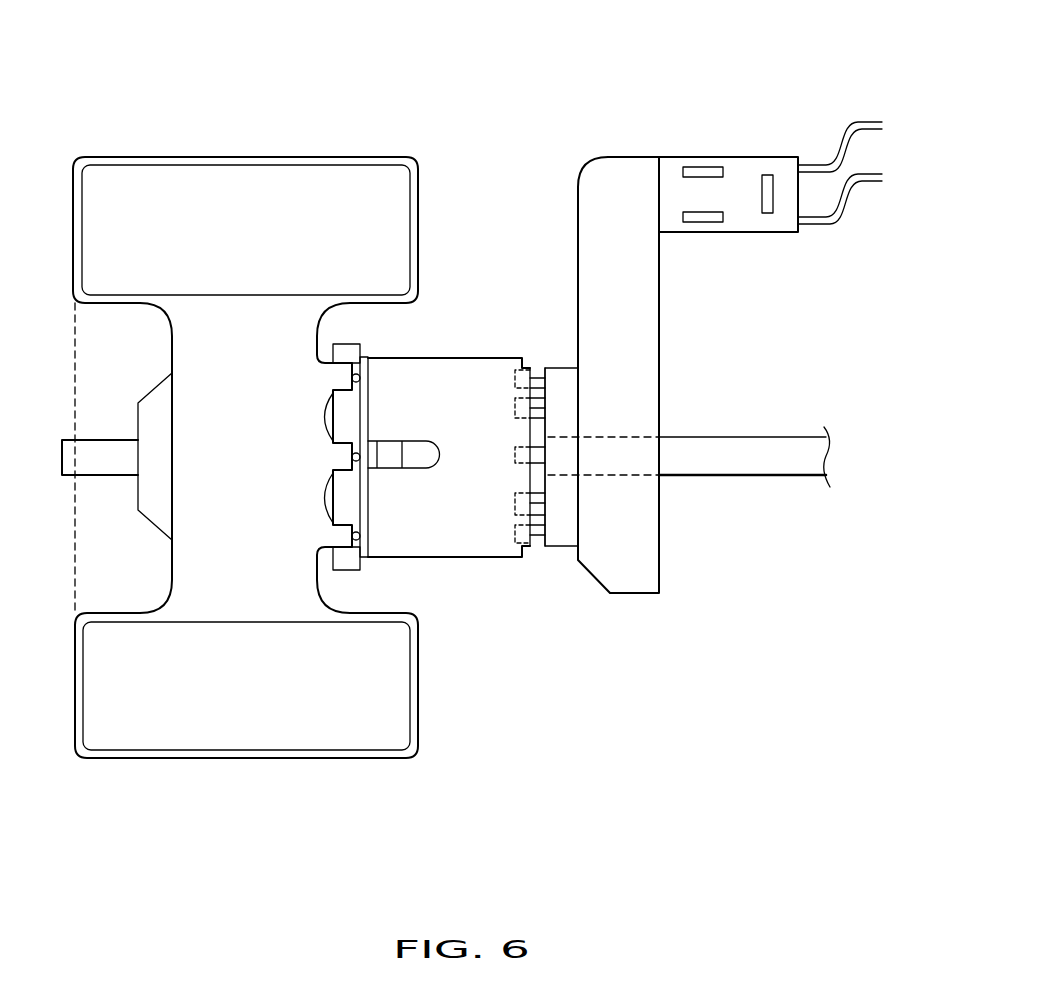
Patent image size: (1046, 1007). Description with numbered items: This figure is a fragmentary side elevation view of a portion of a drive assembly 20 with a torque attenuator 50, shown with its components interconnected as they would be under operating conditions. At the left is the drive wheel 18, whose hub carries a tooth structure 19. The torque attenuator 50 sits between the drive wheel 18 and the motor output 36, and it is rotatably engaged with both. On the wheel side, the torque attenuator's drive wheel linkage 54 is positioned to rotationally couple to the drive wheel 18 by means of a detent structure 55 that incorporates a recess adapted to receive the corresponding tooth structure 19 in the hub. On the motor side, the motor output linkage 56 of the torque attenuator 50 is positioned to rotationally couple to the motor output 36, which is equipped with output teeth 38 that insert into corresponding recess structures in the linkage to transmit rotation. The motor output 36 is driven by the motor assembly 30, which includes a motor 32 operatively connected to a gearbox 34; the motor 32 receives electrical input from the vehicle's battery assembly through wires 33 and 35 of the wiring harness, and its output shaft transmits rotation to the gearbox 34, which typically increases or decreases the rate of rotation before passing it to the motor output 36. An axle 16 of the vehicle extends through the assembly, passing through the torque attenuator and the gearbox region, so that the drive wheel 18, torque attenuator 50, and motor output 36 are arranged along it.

The axle 16 is at (799, 448).
The drive wheel 18 is at (232, 132).
The tooth structure 19 is at (337, 533).
The drive assembly 20 is at (493, 83).
The motor assembly 30 is at (680, 128).
The motor 32 is at (747, 165).
The wire 33 is at (878, 118).
The gearbox 34 is at (642, 300).
The wire 35 is at (858, 182).
The motor output 36 is at (568, 373).
The output teeth 38 is at (537, 368).
The torque attenuator 50 is at (429, 356).
The drive wheel linkage 54 is at (374, 573).
The detent structure 55 is at (353, 538).
The motor output linkage 56 is at (530, 558).